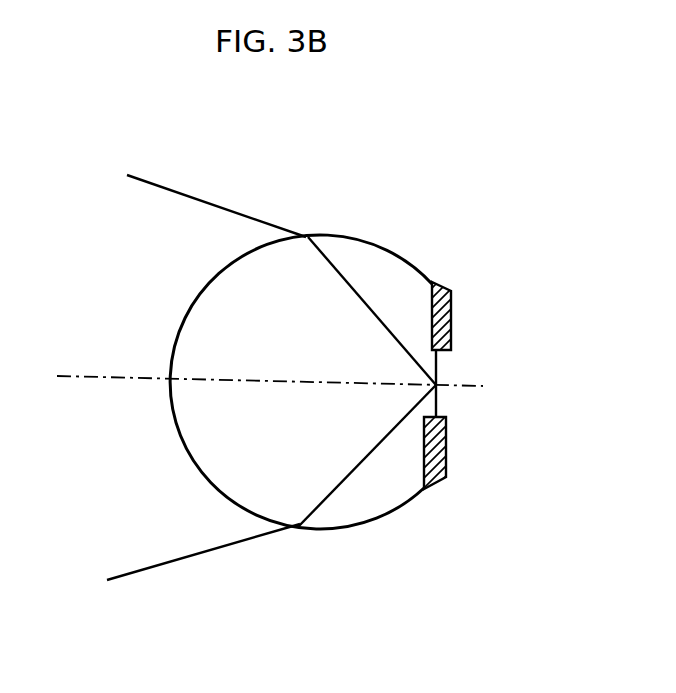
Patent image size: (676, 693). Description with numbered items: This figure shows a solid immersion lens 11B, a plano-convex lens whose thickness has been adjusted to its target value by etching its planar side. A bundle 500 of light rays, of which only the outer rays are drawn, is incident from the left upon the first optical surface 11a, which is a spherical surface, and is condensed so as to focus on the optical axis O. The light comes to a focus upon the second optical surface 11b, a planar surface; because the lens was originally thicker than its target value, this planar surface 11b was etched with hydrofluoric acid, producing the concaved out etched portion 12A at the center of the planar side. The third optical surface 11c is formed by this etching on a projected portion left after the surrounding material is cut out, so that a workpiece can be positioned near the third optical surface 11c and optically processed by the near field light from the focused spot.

The bundle of light rays 500 is at (185, 193).
The solid immersion lens 11B is at (311, 382).
The first optical surface 11a is at (196, 465).
The second optical surface 11b is at (452, 305).
The third optical surface 11c is at (440, 408).
The concaved out etched portion 12A is at (440, 357).
The optical axis O is at (251, 371).